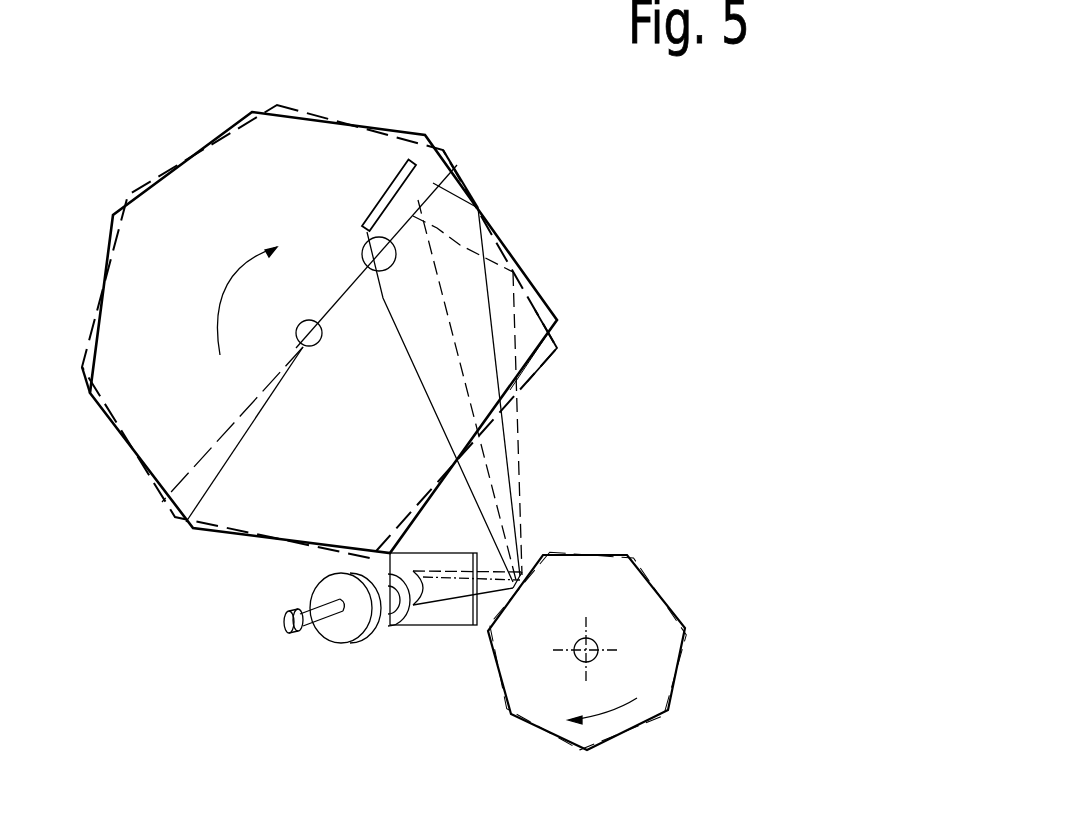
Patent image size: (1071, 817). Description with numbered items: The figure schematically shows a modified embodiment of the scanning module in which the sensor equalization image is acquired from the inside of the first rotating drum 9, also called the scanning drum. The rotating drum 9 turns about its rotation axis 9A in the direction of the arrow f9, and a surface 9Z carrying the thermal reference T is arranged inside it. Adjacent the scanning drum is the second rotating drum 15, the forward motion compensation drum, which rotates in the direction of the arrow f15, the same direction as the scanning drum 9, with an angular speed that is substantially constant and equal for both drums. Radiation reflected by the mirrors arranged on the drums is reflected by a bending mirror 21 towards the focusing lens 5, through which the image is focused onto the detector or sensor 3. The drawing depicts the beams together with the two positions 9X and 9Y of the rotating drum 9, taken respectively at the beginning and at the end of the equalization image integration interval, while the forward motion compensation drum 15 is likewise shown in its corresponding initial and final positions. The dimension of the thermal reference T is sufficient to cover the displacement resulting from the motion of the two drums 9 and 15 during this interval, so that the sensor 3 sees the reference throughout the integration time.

The first rotating drum 9 is at (118, 184).
The rotation axis 9A is at (303, 323).
The surface 9Z is at (363, 262).
The angular position of the scanning drum 9X is at (541, 351).
The angular position of the scanning drum 9Y is at (532, 383).
The thermal reference T is at (395, 185).
The arrow f9 is at (223, 300).
The second rotating drum 15 is at (694, 672).
The arrow f15 is at (612, 715).
The detector or sensor 3 is at (285, 635).
The focusing lens 5 is at (340, 640).
The bending mirror 21 is at (445, 614).